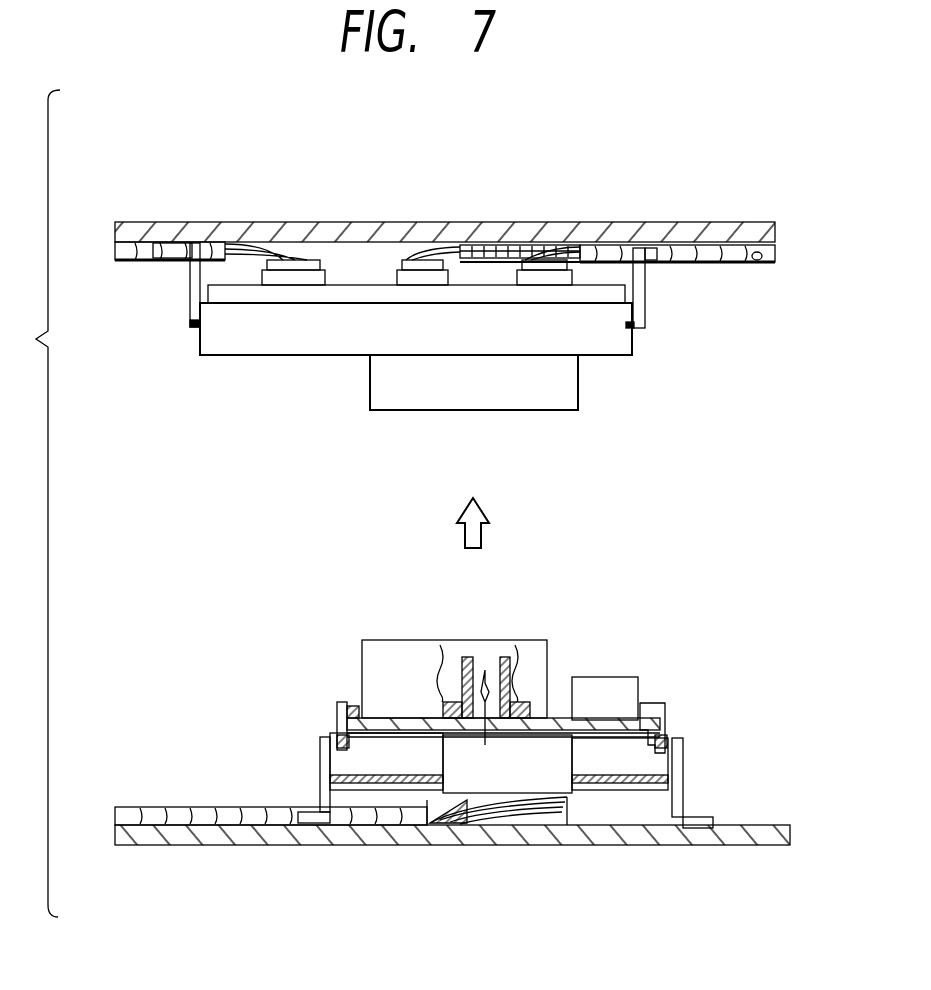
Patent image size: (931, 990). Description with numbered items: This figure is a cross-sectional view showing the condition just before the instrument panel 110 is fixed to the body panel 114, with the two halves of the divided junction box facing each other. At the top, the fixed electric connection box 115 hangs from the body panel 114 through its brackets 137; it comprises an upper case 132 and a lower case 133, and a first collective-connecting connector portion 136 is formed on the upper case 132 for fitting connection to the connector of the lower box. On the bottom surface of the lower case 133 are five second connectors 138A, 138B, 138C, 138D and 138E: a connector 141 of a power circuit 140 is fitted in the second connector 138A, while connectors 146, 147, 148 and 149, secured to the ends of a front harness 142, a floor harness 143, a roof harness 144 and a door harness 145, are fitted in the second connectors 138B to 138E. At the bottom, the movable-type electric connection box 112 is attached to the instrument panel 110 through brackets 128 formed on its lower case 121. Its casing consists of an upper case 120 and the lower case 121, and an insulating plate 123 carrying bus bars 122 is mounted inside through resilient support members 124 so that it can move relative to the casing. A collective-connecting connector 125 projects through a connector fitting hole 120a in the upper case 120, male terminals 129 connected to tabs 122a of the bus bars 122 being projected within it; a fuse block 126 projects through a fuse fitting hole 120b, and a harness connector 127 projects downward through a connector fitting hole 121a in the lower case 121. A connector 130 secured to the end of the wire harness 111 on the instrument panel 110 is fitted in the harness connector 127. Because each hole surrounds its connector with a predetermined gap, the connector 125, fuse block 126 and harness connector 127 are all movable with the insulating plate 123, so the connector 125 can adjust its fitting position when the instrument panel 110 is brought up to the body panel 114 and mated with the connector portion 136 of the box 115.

The instrument panel 110 is at (452, 866).
The wire harness 111 is at (271, 852).
The movable-type electric connection box 112 is at (499, 761).
The body panel 114 is at (445, 206).
The electric connection box 115 is at (395, 297).
The upper case 120 is at (497, 690).
The connector fitting hole 120a is at (319, 693).
The fuse fitting hole 120b is at (618, 688).
The lower case 121 is at (499, 809).
The connector fitting hole 121a is at (426, 843).
The bus bars 122 is at (459, 690).
The tabs 122a is at (425, 870).
The insulating plate 123 is at (300, 714).
The resilient support members 124 is at (501, 730).
The collective-connecting connector 125 is at (461, 651).
The fuse block 126 is at (626, 670).
The harness connector 127 is at (507, 816).
The brackets 128 is at (513, 819).
The male terminals 129 is at (486, 664).
The connector 130 is at (498, 850).
The upper case 132 is at (416, 359).
The lower case 133 is at (416, 237).
The first collective-connecting connector portion 136 is at (514, 387).
The brackets 137 is at (422, 302).
The second connector 138A is at (294, 228).
The second connector 138B is at (624, 214).
The second connector 138C is at (624, 214).
The second connector 138D is at (475, 198).
The second connector 138E is at (475, 198).
The power circuit 140 is at (155, 277).
The connector 141 is at (266, 215).
The front harness 142 is at (747, 221).
The floor harness 143 is at (677, 220).
The roof harness 144 is at (520, 205).
The door harness 145 is at (520, 213).
The connector 146 is at (570, 218).
The connector 147 is at (570, 218).
The connector 148 is at (411, 204).
The connector 149 is at (411, 204).